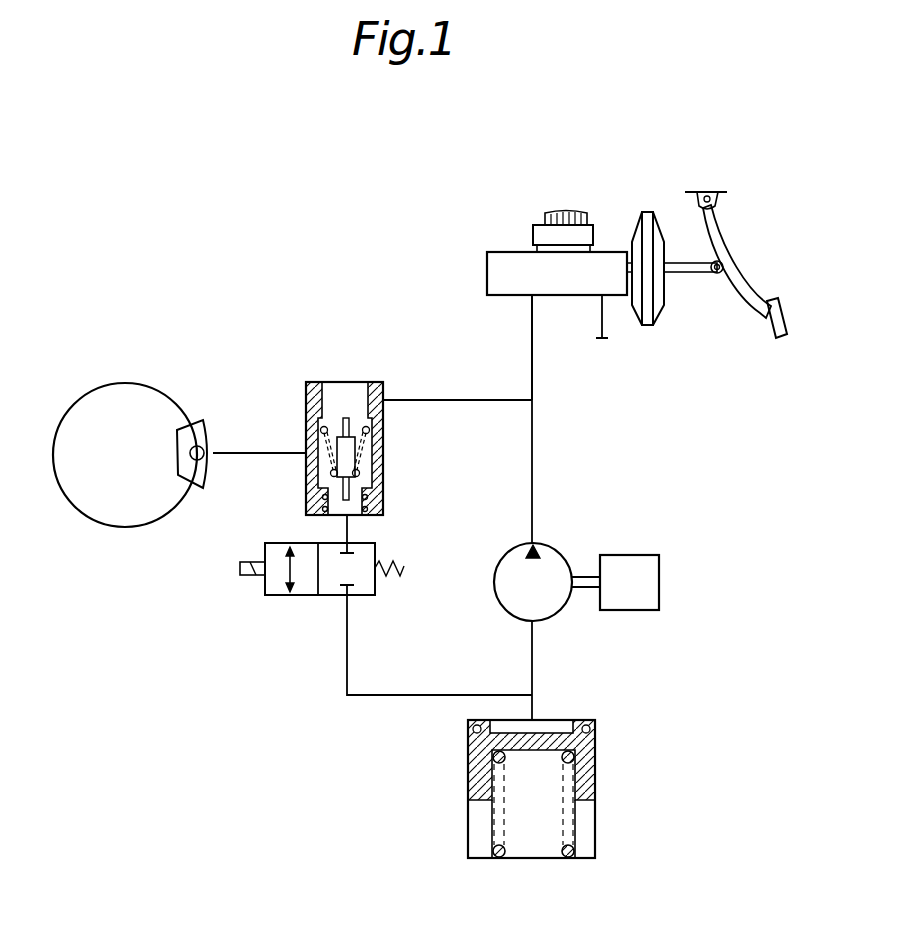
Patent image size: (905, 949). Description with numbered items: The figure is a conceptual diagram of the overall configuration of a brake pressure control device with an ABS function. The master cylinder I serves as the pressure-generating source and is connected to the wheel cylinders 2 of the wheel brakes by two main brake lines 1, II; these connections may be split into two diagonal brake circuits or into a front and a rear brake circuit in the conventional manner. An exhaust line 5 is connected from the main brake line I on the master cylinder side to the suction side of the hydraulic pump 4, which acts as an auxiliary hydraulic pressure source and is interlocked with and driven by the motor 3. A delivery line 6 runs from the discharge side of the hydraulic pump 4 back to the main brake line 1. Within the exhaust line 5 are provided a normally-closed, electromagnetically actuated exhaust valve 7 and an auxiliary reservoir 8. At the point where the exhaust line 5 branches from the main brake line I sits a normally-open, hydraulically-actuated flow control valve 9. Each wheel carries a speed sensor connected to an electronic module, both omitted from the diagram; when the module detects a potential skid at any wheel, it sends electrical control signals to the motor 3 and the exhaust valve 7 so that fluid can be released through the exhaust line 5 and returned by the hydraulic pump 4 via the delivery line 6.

The main brake line 1 is at (497, 252).
The wheel cylinder 2 is at (188, 455).
The motor 3 is at (659, 573).
The hydraulic pump 4 is at (553, 545).
The exhaust line 5 is at (365, 695).
The delivery line 6 is at (533, 458).
The exhaust valve 7 is at (300, 596).
The auxiliary reservoir 8 is at (595, 770).
The flow control valve 9 is at (313, 382).
The master cylinder I is at (532, 350).
The main brake line II is at (602, 318).